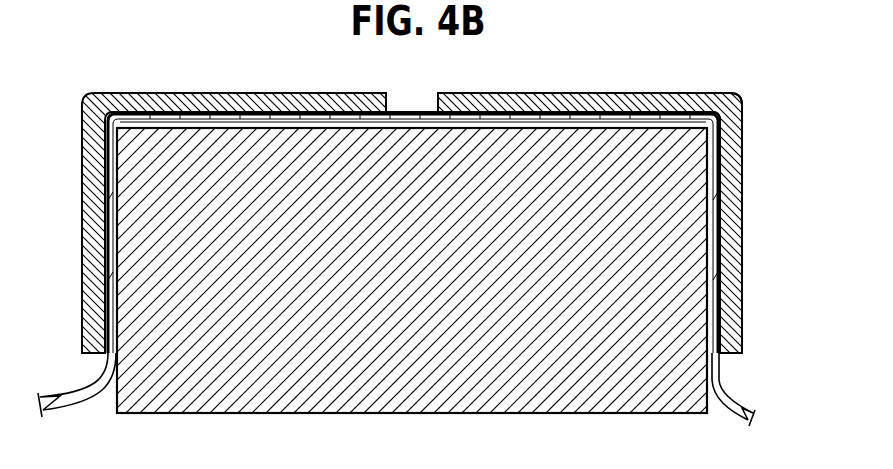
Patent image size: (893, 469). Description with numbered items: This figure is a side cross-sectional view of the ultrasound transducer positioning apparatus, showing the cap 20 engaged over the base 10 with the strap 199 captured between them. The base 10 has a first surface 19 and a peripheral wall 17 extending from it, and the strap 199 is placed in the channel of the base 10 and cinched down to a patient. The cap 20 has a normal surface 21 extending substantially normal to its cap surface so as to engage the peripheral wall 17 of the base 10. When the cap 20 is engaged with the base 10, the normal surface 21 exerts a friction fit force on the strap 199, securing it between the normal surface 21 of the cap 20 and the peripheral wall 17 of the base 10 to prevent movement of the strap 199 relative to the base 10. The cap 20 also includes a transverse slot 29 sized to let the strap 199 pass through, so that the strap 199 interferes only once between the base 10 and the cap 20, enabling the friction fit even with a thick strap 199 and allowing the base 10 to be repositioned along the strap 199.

The base 10 is at (115, 405).
The peripheral wall 17 is at (711, 412).
The first surface 19 is at (232, 414).
The cap 20 is at (83, 178).
The normal surface 21 is at (743, 232).
The transverse slot 29 is at (411, 97).
The strap 199 is at (719, 372).